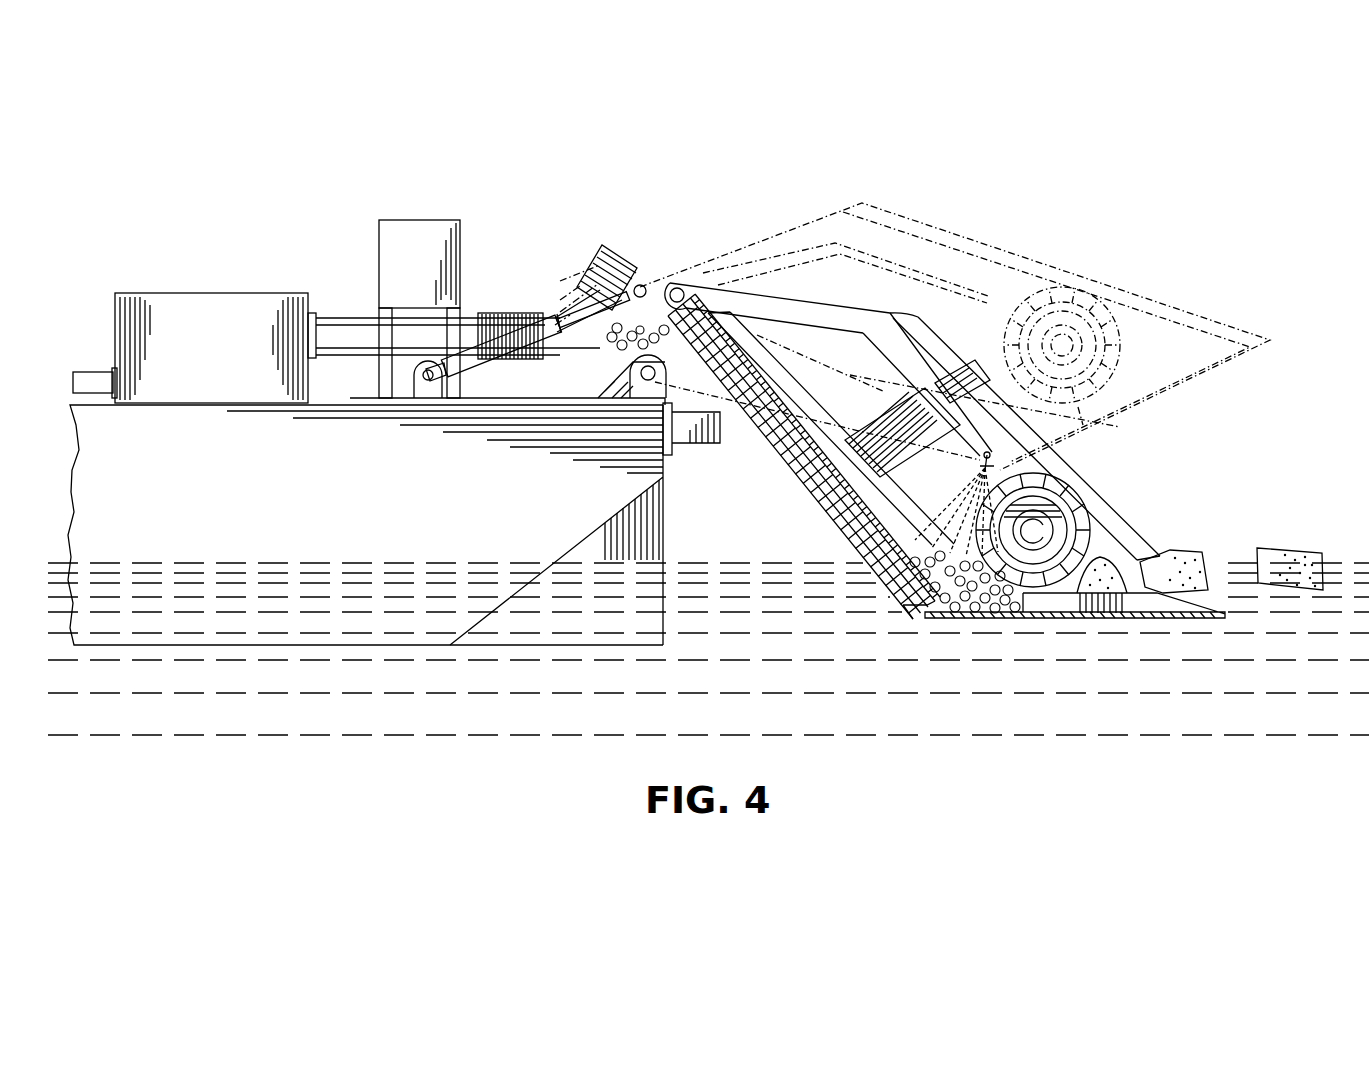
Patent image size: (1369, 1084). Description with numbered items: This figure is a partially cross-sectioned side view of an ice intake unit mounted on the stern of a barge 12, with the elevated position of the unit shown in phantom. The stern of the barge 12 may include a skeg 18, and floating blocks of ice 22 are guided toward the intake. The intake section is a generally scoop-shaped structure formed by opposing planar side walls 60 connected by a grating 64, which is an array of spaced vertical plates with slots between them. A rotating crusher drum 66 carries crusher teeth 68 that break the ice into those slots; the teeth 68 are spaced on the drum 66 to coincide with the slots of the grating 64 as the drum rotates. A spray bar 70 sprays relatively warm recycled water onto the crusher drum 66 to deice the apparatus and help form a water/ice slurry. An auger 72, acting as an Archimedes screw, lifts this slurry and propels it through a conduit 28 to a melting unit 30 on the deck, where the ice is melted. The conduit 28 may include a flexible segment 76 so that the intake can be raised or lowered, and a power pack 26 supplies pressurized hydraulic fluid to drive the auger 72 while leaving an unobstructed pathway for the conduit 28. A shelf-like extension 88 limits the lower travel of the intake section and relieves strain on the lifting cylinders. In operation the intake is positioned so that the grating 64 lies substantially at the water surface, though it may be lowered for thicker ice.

The barge 12 is at (328, 518).
The skeg 18 is at (663, 550).
The blocks of ice 22 is at (1287, 553).
The power pack 26 is at (430, 228).
The conduit 28 is at (345, 318).
The melting unit 30 is at (198, 298).
The side wall 60 is at (1060, 470).
The grating 64 is at (1118, 608).
The crusher drum 66 is at (1090, 530).
The crusher teeth 68 is at (1088, 538).
The spray bar 70 is at (800, 322).
The auger 72 is at (800, 493).
The flexible segment 76 is at (508, 317).
The shelf-like extension 88 is at (680, 442).